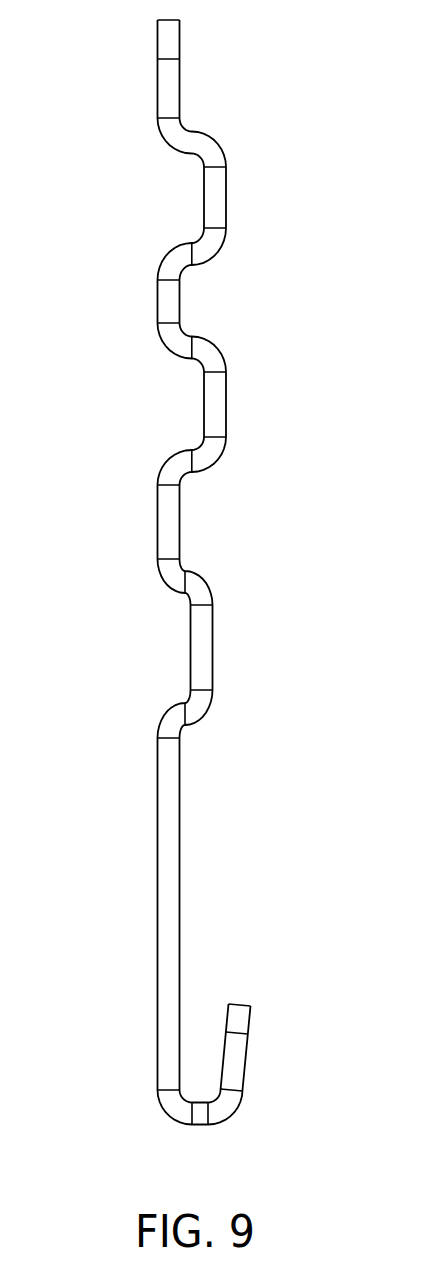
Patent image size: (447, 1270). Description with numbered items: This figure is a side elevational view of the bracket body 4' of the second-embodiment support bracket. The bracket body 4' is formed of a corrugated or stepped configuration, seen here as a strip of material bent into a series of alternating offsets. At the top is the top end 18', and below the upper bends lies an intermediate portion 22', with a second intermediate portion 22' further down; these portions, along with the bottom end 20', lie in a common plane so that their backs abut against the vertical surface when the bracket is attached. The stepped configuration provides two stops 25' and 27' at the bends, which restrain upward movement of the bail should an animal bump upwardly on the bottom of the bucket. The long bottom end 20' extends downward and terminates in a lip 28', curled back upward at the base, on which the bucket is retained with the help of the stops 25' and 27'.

The bracket body 4' is at (256, 572).
The top end 18' is at (129, 69).
The intermediate portion 22' is at (129, 419).
The stop 25' is at (235, 228).
The stop 27' is at (242, 430).
The bottom end 20' is at (128, 914).
The lip 28' is at (264, 1047).